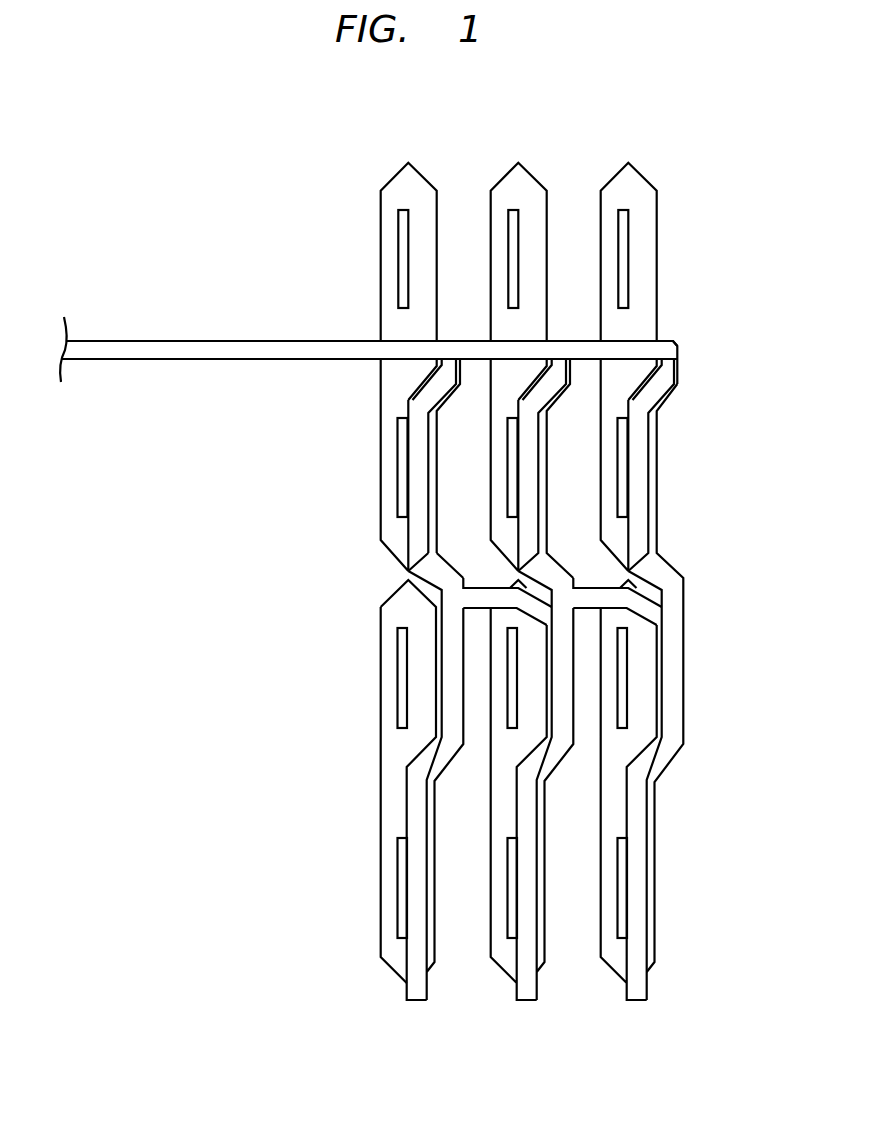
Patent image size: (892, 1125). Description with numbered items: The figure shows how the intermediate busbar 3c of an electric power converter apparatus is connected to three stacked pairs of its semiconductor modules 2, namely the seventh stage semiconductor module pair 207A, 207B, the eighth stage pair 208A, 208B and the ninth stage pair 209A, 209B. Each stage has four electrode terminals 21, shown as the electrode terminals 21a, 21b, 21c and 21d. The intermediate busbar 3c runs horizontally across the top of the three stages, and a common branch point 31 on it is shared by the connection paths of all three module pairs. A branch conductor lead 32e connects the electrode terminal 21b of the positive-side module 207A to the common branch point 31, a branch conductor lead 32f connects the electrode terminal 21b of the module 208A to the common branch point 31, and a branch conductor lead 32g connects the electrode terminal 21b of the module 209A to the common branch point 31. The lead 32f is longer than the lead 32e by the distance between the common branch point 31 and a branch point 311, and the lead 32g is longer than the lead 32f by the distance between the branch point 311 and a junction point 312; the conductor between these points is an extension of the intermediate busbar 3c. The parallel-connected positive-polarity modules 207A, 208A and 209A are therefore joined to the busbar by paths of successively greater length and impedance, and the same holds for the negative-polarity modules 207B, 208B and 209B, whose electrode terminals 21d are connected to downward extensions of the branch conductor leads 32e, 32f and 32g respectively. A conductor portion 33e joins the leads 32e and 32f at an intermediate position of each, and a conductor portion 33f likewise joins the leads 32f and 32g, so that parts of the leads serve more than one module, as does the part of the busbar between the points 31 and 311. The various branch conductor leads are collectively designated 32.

The semiconductor modules 2 is at (385, 805).
The intermediate busbar 3c is at (162, 360).
The electrode terminals 21 is at (398, 263).
The electrode terminal 21a is at (623, 243).
The electrode terminal 21b is at (623, 500).
The electrode terminal 21c is at (622, 712).
The electrode terminal 21d is at (622, 887).
The common branch point 31 is at (453, 348).
The branch point 311 is at (566, 348).
The junction point 312 is at (665, 352).
The branch conductor leads 32 is at (413, 450).
The branch conductor lead 32e is at (417, 538).
The branch conductor lead 32f is at (522, 440).
The branch conductor lead 32g is at (678, 465).
The conductor portion 33e is at (484, 602).
The conductor portion 33f is at (584, 603).
The positive-side semiconductor module 207A is at (380, 219).
The positive-side semiconductor module 208A is at (527, 180).
The positive-side semiconductor module 209A is at (678, 219).
The negative-side semiconductor module 207B is at (379, 823).
The negative-side semiconductor module 208B is at (497, 960).
The negative-side semiconductor module 209B is at (666, 823).